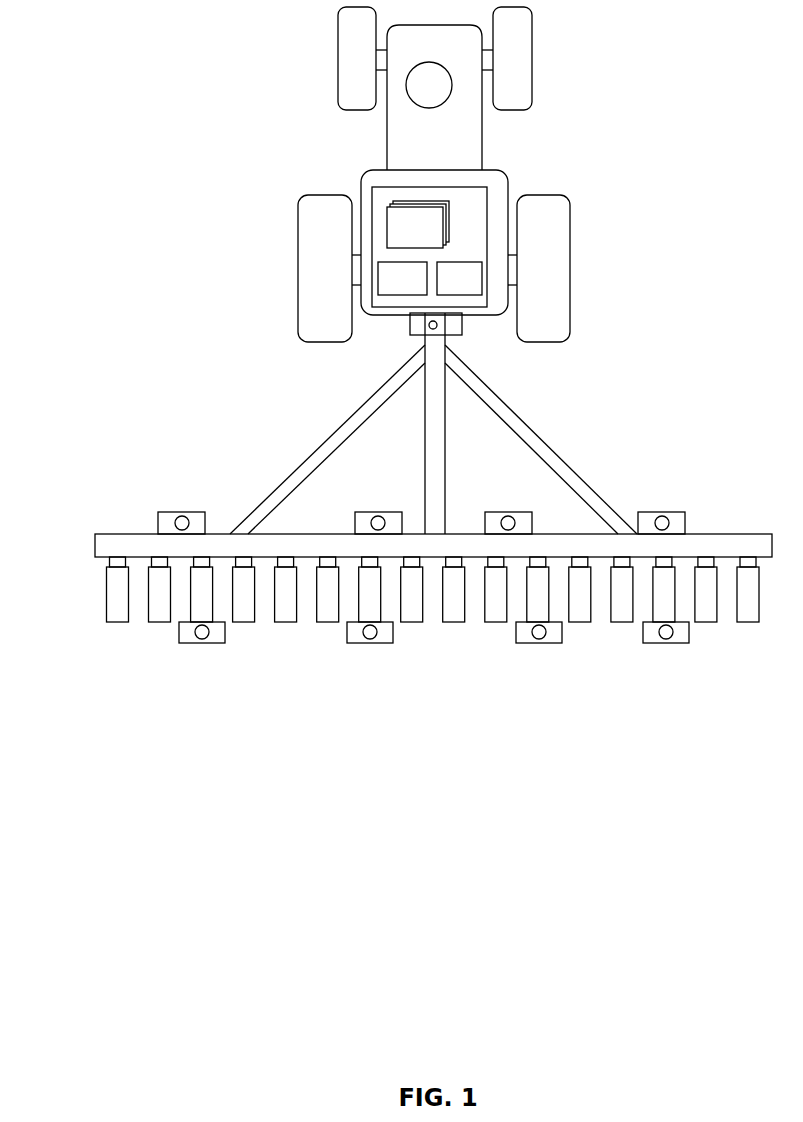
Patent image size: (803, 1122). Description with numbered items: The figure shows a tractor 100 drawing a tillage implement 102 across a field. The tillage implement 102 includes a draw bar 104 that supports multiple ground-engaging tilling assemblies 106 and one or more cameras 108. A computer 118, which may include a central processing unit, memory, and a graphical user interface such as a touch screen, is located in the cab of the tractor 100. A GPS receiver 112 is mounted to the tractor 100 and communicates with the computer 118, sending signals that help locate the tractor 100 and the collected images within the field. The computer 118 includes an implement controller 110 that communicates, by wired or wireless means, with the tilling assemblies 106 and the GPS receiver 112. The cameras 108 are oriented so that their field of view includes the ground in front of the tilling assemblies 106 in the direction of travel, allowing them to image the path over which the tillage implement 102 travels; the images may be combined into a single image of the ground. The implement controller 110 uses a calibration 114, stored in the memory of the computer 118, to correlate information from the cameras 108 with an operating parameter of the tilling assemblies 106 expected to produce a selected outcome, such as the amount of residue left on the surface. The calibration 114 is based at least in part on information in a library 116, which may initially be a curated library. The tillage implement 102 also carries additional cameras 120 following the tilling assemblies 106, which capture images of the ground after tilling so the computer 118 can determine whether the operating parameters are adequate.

The tractor 100 is at (586, 50).
The tillage implement 102 is at (345, 425).
The draw bar 104 is at (135, 530).
The ground-engaging tilling assemblies 106 is at (107, 612).
The cameras 108 is at (170, 512).
The implement controller 110 is at (387, 290).
The GPS receiver 112 is at (414, 96).
The calibration 114 is at (445, 290).
The library 116 is at (400, 240).
The computer 118 is at (478, 188).
The additional cameras 120 is at (183, 637).